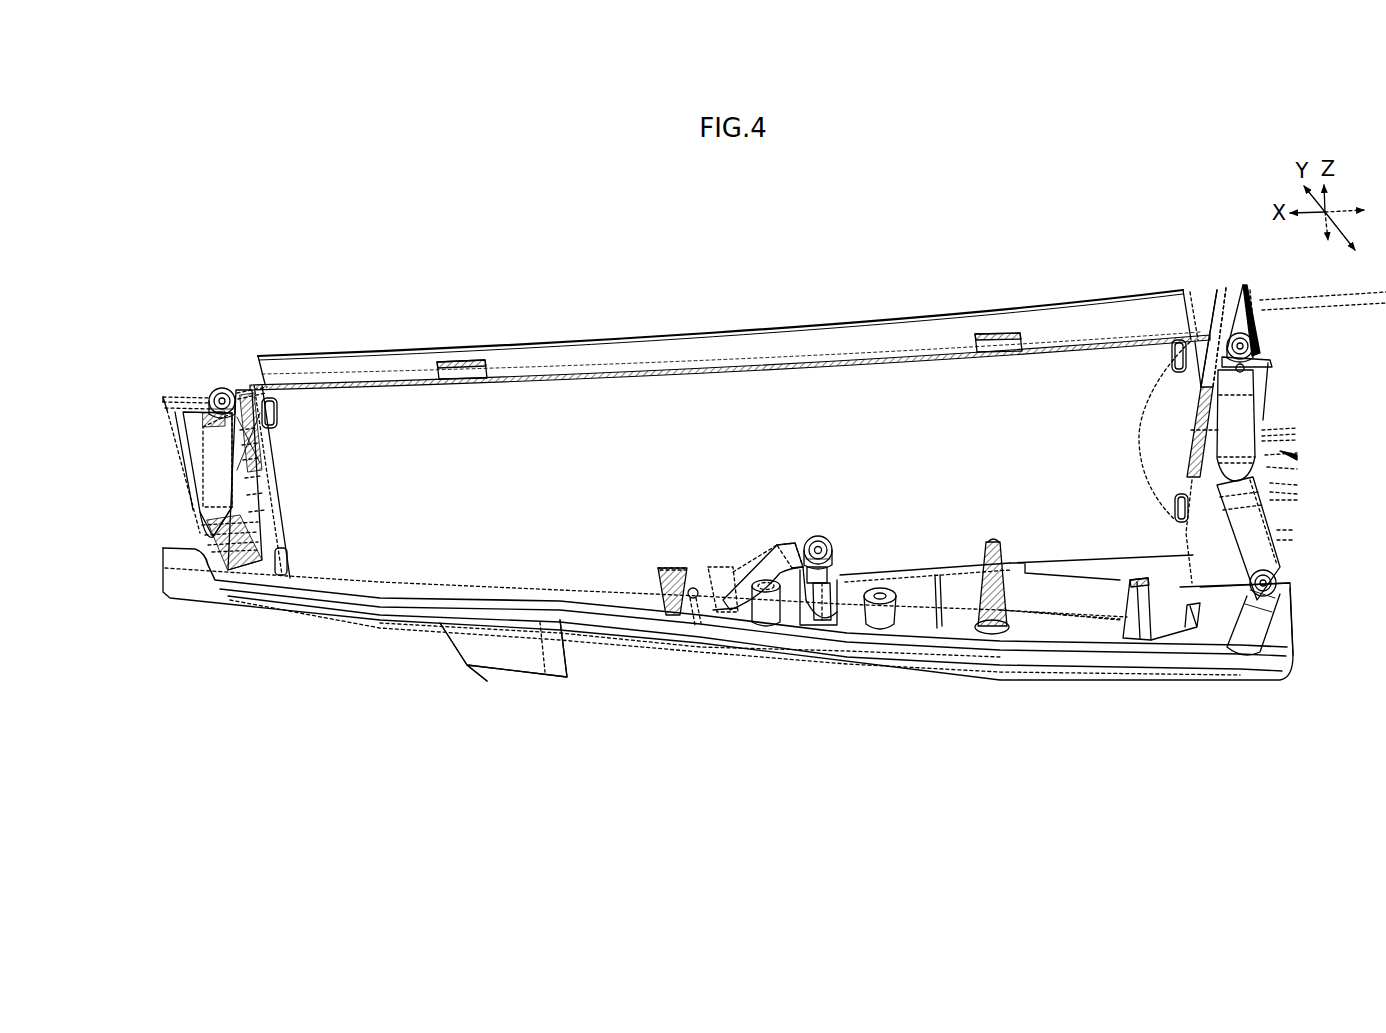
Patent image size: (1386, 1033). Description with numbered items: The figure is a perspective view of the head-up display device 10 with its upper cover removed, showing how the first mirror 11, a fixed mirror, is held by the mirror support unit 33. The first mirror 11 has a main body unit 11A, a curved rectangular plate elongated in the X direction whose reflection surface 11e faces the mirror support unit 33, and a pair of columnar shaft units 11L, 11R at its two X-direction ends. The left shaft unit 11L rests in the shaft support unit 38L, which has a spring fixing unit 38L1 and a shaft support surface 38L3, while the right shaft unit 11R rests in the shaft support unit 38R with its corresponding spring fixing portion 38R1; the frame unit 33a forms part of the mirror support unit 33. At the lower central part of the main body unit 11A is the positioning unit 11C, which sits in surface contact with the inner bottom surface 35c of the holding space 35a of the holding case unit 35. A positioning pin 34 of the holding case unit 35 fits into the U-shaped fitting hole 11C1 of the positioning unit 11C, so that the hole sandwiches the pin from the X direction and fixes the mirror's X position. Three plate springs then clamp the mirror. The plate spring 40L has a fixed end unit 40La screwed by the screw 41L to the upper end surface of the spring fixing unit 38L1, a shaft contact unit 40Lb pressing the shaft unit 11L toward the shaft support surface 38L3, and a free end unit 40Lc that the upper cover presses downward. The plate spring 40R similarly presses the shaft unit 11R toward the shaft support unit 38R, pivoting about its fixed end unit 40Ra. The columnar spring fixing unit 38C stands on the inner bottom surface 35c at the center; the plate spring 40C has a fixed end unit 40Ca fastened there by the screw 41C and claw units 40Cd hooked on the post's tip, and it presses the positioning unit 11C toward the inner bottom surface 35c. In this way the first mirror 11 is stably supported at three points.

The head-up display device 10 is at (440, 662).
The first mirror 11 is at (850, 354).
The main body unit 11A is at (604, 402).
The positioning unit 11C is at (671, 562).
The fitting hole 11C1 is at (693, 562).
The reflection surface 11e is at (535, 372).
The shaft unit 11L is at (238, 465).
The shaft unit 11R is at (1205, 408).
The mirror support unit 33 is at (954, 313).
The frame unit 33a is at (700, 350).
The positioning pin 34 is at (693, 600).
The holding case unit 35 is at (398, 628).
The holding space 35a is at (1083, 597).
The inner bottom surface 35c is at (745, 612).
The shaft support unit 38L is at (231, 530).
The spring fixing unit 38L1 is at (250, 430).
The shaft support surface 38L3 is at (243, 530).
The spring fixing unit 38C is at (824, 618).
The shaft support unit 38R is at (1218, 479).
The right bracket first portion 38R1 is at (1222, 386).
The plate spring 40L is at (193, 508).
The fixed end unit 40La is at (212, 418).
The shaft contact unit 40Lb is at (213, 452).
The free end unit 40Lc is at (185, 517).
The plate spring 40C is at (777, 545).
The fixed end unit 40Ca is at (793, 555).
The claw units 40Cd is at (838, 566).
The plate spring 40R is at (1262, 386).
The fixed end unit 40Ra is at (1255, 355).
The screw 41L is at (221, 388).
The screw 41C is at (820, 535).